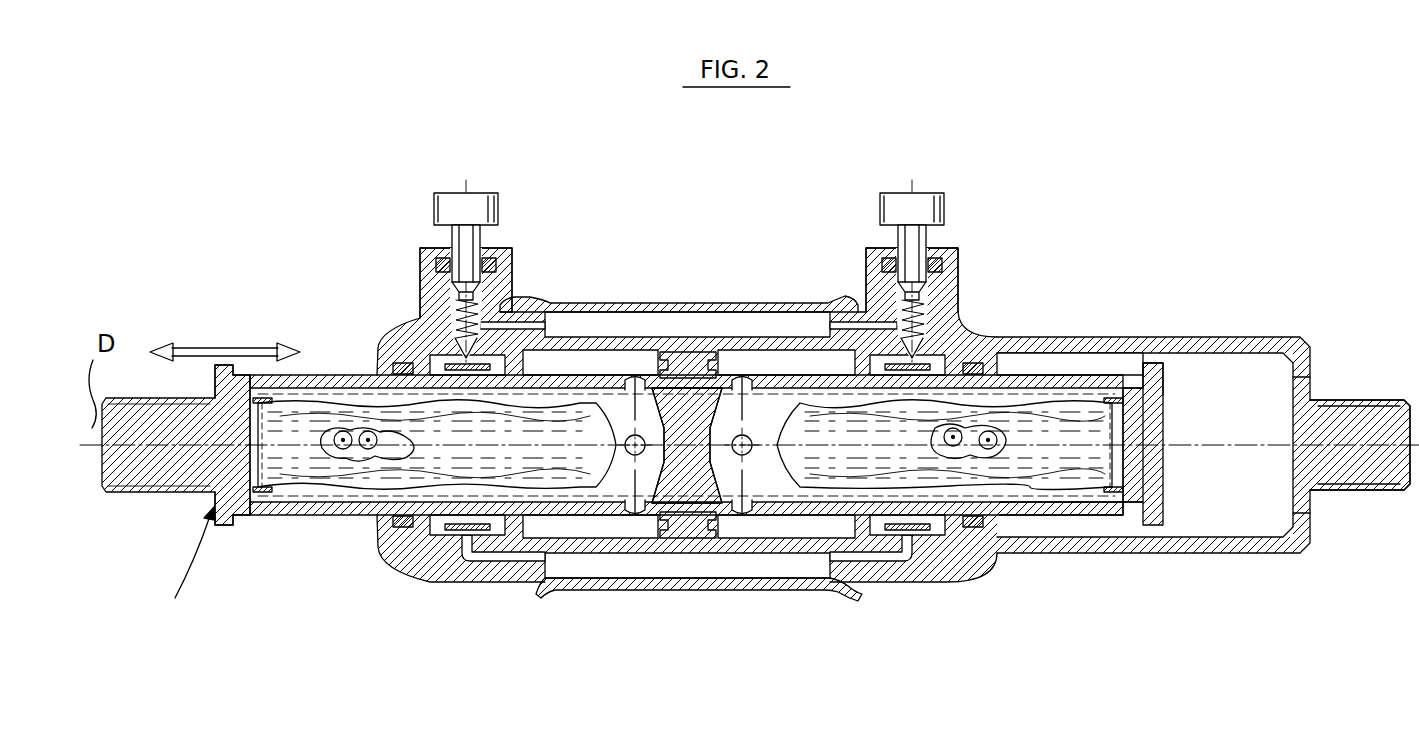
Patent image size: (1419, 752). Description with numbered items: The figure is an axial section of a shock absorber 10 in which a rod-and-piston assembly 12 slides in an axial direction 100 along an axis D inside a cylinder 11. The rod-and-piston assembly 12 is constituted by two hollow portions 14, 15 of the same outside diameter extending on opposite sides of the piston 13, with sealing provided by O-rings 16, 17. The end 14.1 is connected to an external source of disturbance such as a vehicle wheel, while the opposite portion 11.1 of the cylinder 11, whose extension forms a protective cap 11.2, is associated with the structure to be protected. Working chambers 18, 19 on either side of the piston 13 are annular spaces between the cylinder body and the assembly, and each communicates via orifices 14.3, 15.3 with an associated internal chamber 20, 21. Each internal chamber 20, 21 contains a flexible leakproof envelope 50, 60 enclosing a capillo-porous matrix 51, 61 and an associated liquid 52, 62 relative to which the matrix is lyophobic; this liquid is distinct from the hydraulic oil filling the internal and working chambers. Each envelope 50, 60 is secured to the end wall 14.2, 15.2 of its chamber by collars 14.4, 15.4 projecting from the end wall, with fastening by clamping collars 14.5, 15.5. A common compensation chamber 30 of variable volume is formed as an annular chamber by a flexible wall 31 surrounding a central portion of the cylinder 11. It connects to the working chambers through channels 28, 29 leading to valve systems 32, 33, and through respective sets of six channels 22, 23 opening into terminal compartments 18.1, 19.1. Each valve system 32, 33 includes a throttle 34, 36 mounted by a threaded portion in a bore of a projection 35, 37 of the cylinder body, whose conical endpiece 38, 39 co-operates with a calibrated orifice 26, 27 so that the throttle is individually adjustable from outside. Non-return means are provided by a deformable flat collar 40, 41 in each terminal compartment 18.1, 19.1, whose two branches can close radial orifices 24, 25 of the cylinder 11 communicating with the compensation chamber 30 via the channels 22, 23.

The shock absorber 10 is at (1180, 135).
The cylinder 11 is at (692, 345).
The portion of the cylinder 11.1 is at (1372, 475).
The protective cap 11.2 is at (1265, 348).
The rod-and-piston assembly 12 is at (180, 560).
The piston 13 is at (668, 545).
The hollow portion 14 is at (330, 520).
The end of the rod-and-piston assembly 14.1 is at (133, 470).
The end wall 14.2 is at (248, 415).
The orifices 14.3 is at (683, 350).
The collar 14.4 is at (255, 462).
The clamping collar 14.5 is at (268, 492).
The hollow portion 15 is at (1087, 520).
The end wall 15.2 is at (1145, 462).
The orifices 15.3 is at (742, 378).
The collar 15.4 is at (1138, 428).
The clamping collar 15.5 is at (1150, 395).
The O-ring 16 is at (402, 360).
The O-ring 17 is at (975, 377).
The working chamber 18 is at (622, 355).
The terminal compartment 18.1 is at (466, 342).
The working chamber 19 is at (793, 355).
The terminal compartment 19.1 is at (968, 365).
The internal chamber 20 is at (614, 485).
The internal chamber 21 is at (762, 487).
The channels 22 is at (505, 562).
The channels 23 is at (782, 522).
The radial orifices 24 is at (463, 548).
The radial orifices 25 is at (872, 548).
The calibrated orifice 26 is at (410, 360).
The calibrated orifice 27 is at (912, 352).
The channel 28 is at (532, 305).
The channel 29 is at (838, 302).
The compensation chamber 30 is at (668, 582).
The flexible wall 31 is at (722, 585).
The valve system 32 is at (456, 223).
The valve system 33 is at (951, 223).
The throttle 34 is at (437, 202).
The projection 35 is at (512, 285).
The throttle 36 is at (948, 205).
The projection 37 is at (962, 275).
The conical endpiece 38 is at (482, 320).
The conical endpiece 39 is at (925, 345).
The deformable flat collar 40 is at (405, 530).
The deformable flat collar 41 is at (952, 560).
The flexible leakproof envelope 50 is at (378, 478).
The capillo-porous matrix 51 is at (368, 432).
The liquid 52 is at (365, 478).
The flexible leakproof envelope 60 is at (1042, 470).
The capillo-porous matrix 61 is at (988, 438).
The liquid 62 is at (1042, 468).
The axial direction 100 is at (226, 340).